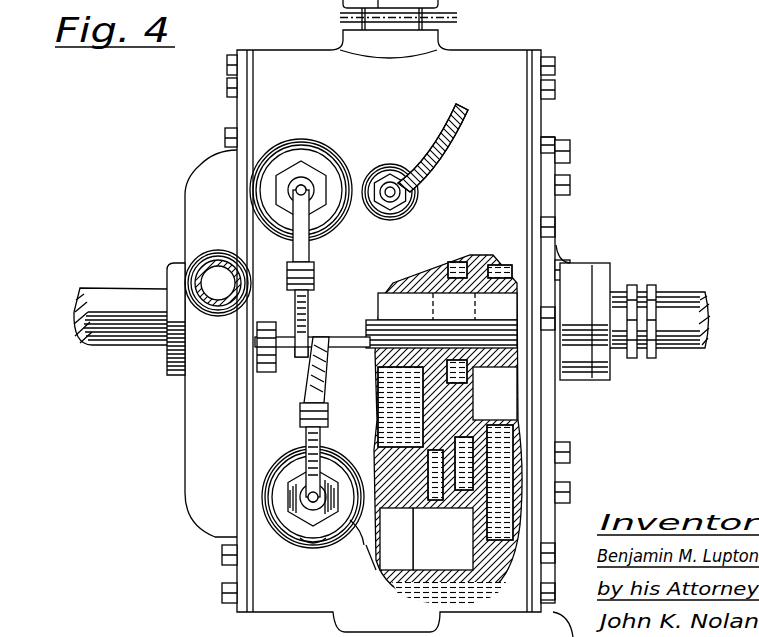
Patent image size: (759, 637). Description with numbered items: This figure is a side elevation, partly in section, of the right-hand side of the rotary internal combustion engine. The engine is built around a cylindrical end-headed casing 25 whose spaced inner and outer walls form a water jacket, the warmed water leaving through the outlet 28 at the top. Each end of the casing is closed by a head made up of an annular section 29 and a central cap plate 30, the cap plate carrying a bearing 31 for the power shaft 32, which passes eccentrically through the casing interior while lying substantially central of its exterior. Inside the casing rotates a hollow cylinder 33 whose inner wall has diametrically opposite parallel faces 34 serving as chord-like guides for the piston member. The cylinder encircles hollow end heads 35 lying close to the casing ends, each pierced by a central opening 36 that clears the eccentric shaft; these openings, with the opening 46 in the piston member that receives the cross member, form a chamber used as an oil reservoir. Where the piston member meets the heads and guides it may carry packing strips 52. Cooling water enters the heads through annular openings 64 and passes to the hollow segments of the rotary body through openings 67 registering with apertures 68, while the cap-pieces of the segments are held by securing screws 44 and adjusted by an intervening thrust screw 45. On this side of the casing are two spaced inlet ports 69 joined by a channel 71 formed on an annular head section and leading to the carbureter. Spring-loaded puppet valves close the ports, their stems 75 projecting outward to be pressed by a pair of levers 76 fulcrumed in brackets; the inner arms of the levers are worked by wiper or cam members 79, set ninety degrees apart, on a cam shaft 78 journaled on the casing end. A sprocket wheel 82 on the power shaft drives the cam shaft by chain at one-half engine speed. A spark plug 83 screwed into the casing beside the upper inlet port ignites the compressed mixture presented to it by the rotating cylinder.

The casing 25 is at (490, 608).
The outlet 28 is at (445, 22).
The annular section 29 is at (236, 135).
The cap plate 30 is at (553, 437).
The bearing 31 is at (177, 265).
The power shaft 32 is at (113, 335).
The cylinder 33 is at (443, 562).
The parallel faces 34 is at (380, 555).
The end heads 35 is at (495, 263).
The central opening 36 is at (500, 380).
The securing screws 44 is at (316, 536).
The thrust screw 45 is at (375, 522).
The opening 46 is at (458, 367).
The packing strips 52 is at (462, 385).
The annular openings 64 is at (500, 430).
The openings 67 is at (493, 437).
The apertures 68 is at (415, 508).
The inlet ports 69 is at (303, 180).
The channel 71 is at (200, 420).
The valve stems 75 is at (335, 150).
The levers 76 is at (310, 247).
The cam shaft 78 is at (342, 337).
The cam members 79 is at (306, 357).
The sprocket wheel 82 is at (652, 286).
The spark plug 83 is at (404, 195).